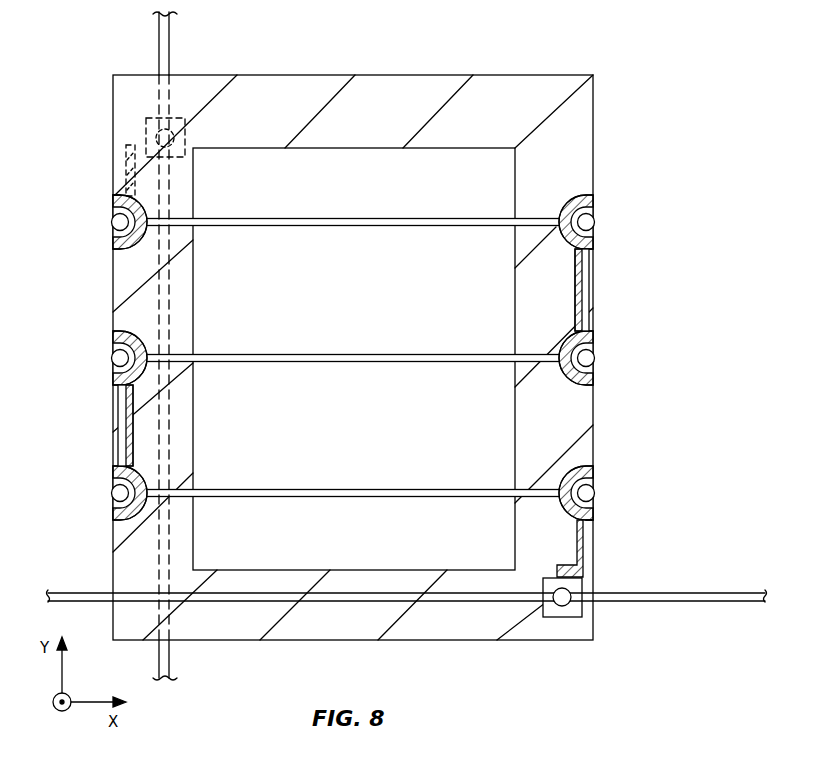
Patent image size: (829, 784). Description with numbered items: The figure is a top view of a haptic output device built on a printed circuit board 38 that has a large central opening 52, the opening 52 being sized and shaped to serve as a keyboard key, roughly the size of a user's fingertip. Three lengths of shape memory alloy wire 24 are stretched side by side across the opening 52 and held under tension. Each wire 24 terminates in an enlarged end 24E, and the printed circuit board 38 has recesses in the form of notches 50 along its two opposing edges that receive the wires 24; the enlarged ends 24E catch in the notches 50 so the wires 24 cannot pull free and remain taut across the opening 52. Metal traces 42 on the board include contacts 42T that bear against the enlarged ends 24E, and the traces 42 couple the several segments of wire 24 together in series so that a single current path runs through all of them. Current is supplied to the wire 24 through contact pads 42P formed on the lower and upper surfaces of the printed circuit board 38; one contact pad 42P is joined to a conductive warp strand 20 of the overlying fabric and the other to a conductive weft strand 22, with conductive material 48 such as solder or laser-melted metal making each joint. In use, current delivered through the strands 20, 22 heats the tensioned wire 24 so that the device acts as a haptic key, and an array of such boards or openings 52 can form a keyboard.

The warp strand 20 is at (172, 36).
The weft strand 22 is at (703, 605).
The wire 24 is at (363, 226).
The enlarged end 24E is at (111, 222).
The printed circuit board 38 is at (513, 93).
The metal traces 42 is at (140, 158).
The contacts 42T is at (113, 199).
The contact pads 42P is at (184, 133).
The conductive material 48 is at (147, 131).
The notches 50 is at (137, 246).
The opening 52 is at (490, 178).